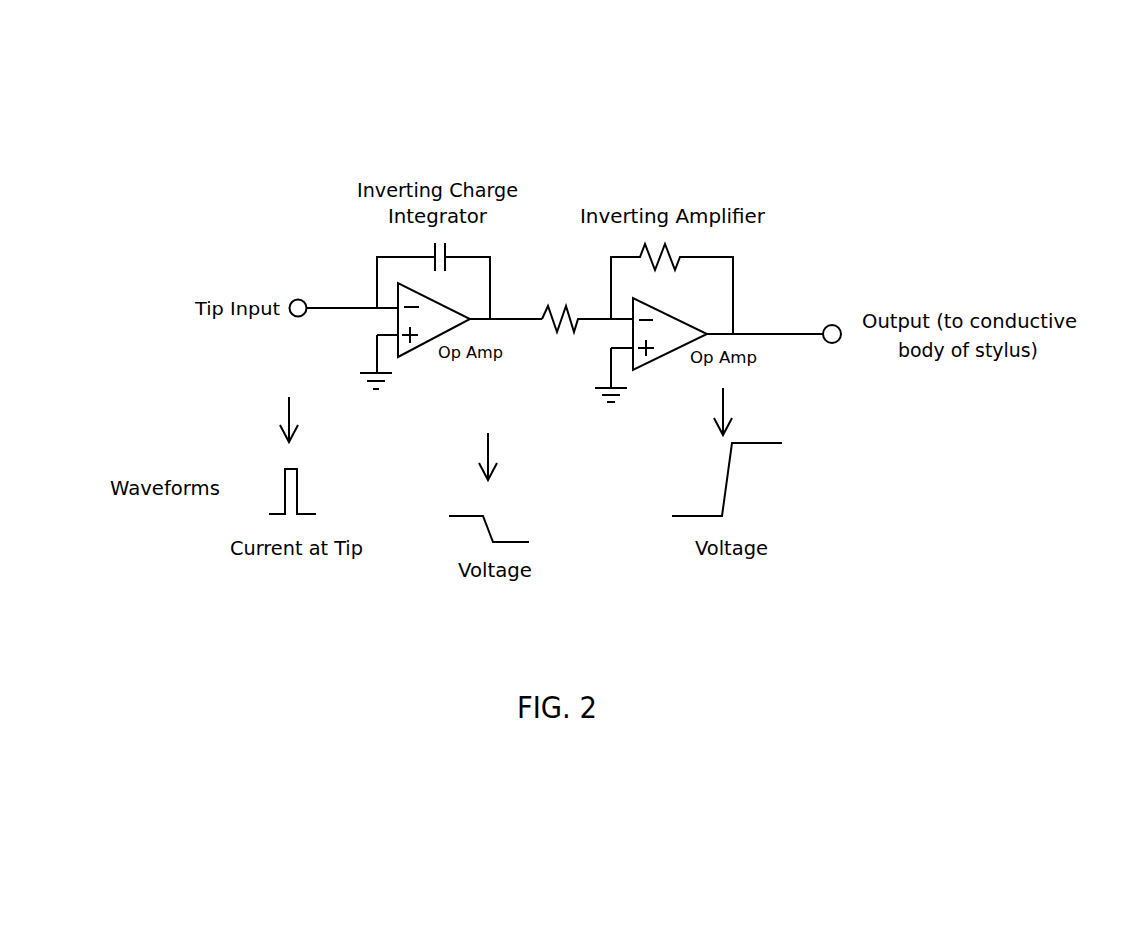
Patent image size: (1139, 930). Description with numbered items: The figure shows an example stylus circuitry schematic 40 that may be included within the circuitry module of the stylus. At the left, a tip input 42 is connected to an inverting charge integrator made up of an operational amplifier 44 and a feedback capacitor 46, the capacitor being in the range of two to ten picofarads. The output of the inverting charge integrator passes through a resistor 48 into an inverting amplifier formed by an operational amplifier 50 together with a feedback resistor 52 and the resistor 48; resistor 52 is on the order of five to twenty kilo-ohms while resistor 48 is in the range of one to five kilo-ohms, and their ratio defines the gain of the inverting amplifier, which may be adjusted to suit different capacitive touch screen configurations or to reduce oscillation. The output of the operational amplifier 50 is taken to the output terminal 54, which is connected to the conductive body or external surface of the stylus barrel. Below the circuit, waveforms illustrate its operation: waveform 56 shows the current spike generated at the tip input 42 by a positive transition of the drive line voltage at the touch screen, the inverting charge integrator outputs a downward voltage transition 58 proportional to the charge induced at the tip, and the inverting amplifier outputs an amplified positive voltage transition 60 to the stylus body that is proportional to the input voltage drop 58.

The schematic 40 is at (782, 96).
The tip input 42 is at (296, 301).
The operational amplifier 44 is at (425, 294).
The capacitor 46 is at (443, 248).
The resistor 48 is at (572, 327).
The operational amplifier 50 is at (645, 303).
The resistor 52 is at (668, 253).
The output to conductive body of stylus 54 is at (836, 324).
The waveform 56 is at (304, 513).
The downward voltage transition 58 is at (507, 541).
The amplified positive voltage transition 60 is at (762, 445).